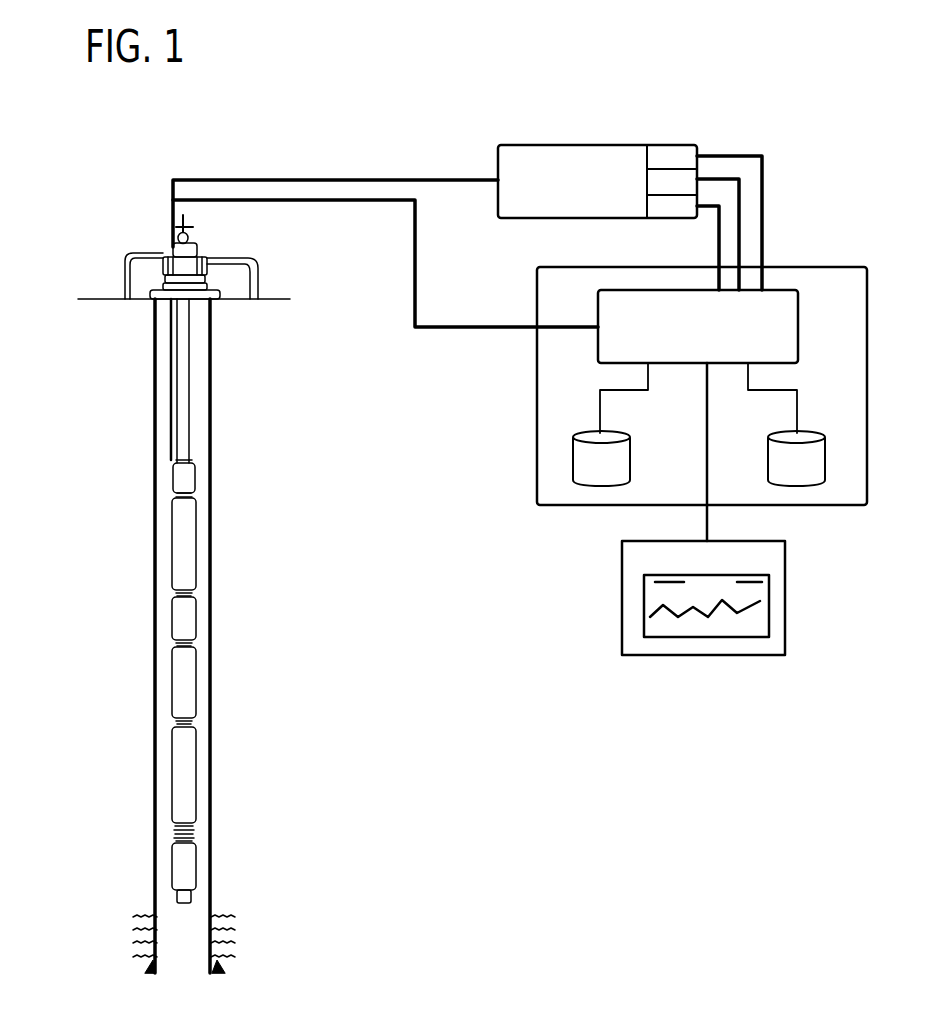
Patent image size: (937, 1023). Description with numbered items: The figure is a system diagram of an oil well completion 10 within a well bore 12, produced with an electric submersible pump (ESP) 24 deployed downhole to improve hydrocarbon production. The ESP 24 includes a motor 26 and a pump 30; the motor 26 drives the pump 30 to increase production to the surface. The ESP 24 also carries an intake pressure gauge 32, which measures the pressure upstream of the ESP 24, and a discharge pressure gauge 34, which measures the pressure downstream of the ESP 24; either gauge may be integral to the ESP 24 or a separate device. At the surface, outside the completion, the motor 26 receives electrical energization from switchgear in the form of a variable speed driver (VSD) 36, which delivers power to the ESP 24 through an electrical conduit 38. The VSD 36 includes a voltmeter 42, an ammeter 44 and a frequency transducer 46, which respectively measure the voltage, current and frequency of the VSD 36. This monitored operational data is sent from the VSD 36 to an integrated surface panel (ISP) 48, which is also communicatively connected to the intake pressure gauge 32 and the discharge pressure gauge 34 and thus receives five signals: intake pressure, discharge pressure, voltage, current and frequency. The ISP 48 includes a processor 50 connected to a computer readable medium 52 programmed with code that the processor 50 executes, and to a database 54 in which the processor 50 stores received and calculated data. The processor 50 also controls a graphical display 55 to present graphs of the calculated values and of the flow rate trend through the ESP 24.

The completion 10 is at (96, 410).
The well bore 12 is at (300, 664).
The electric submersible pump (ESP) 24 is at (143, 500).
The motor 26 is at (185, 781).
The pump 30 is at (185, 567).
The intake pressure gauge 32 is at (185, 866).
The discharge pressure gauge 34 is at (185, 477).
The variable speed driver (VSD) 36 is at (560, 205).
The electrical conduit 38 is at (343, 178).
The voltmeter 42 is at (658, 145).
The ammeter 44 is at (688, 180).
The frequency transducer 46 is at (684, 210).
The integrated surface panel (ISP) 48 is at (800, 267).
The processor 50 is at (775, 327).
The computer readable medium 52 is at (590, 473).
The database 54 is at (784, 473).
The graphical display 55 is at (651, 573).